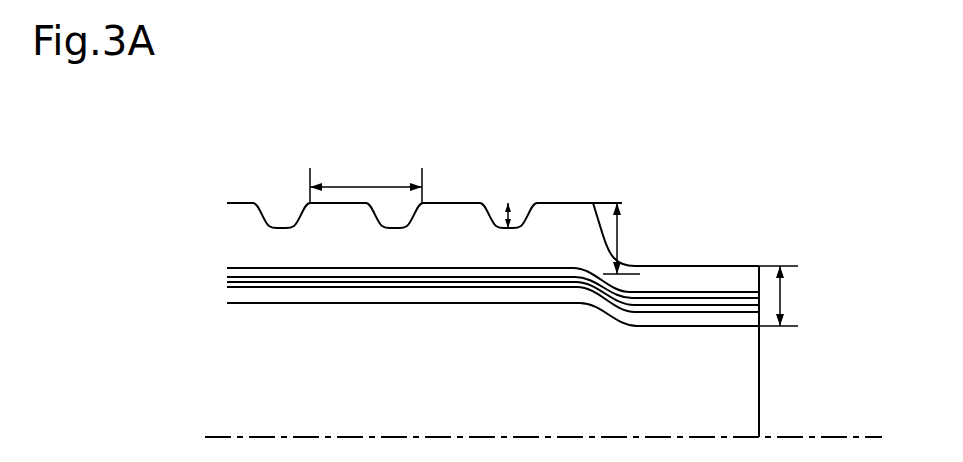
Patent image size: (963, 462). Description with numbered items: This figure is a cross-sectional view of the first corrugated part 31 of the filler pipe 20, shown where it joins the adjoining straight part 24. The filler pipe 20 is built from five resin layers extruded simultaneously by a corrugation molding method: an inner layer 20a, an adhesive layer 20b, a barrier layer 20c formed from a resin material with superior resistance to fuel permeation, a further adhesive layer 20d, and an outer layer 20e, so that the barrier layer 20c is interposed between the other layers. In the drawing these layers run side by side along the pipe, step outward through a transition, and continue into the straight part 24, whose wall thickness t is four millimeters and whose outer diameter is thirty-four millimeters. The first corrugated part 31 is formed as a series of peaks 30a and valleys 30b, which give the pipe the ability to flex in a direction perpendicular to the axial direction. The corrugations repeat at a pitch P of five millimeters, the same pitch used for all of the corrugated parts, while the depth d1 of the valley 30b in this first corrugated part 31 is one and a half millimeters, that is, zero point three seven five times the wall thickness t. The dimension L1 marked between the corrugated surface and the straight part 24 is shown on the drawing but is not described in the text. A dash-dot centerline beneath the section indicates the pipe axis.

The filler pipe 20 is at (87, 153).
The inner layer 20a is at (227, 302).
The adhesive layer 20b is at (227, 285).
The barrier layer 20c is at (227, 277).
The adhesive layer 20d is at (227, 268).
The outer layer 20e is at (250, 247).
The straight part 24 is at (705, 272).
The peak 30a is at (241, 208).
The valley 30b is at (280, 220).
The first corrugated part 31 is at (471, 112).
The pitch P is at (366, 175).
The depth of the valley d1 is at (523, 207).
The step height L1 is at (617, 233).
The wall thickness t is at (780, 296).